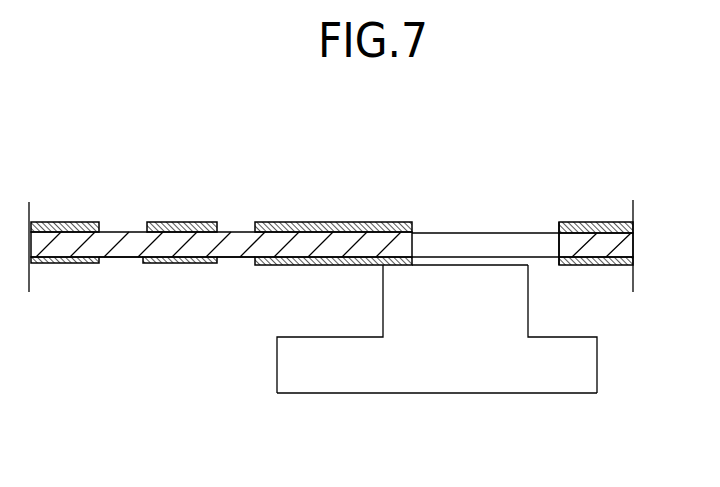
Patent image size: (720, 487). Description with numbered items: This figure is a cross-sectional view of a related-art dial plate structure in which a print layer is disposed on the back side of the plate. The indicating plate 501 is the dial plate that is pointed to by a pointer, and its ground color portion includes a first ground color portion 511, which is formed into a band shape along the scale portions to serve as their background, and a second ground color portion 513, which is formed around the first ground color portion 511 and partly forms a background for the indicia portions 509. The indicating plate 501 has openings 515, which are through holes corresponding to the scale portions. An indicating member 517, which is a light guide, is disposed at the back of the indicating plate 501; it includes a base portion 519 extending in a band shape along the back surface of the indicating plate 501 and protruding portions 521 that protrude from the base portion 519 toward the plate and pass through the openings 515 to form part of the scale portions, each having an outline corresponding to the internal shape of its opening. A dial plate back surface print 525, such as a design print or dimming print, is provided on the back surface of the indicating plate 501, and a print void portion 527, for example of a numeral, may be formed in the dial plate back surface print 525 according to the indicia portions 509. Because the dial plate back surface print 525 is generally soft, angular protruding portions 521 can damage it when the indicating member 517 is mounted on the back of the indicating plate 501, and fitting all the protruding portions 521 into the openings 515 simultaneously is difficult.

The indicating plate 501 is at (630, 240).
The indicia portions 509 is at (128, 234).
The first ground color portion 511 is at (594, 240).
The second ground color portion 513 is at (60, 222).
The openings 515 is at (558, 245).
The indicating member 517 is at (441, 397).
The base portion 519 is at (308, 372).
The protruding portions 521 is at (470, 287).
The dial plate back surface print 525 is at (52, 267).
The print void portion 527 is at (117, 267).